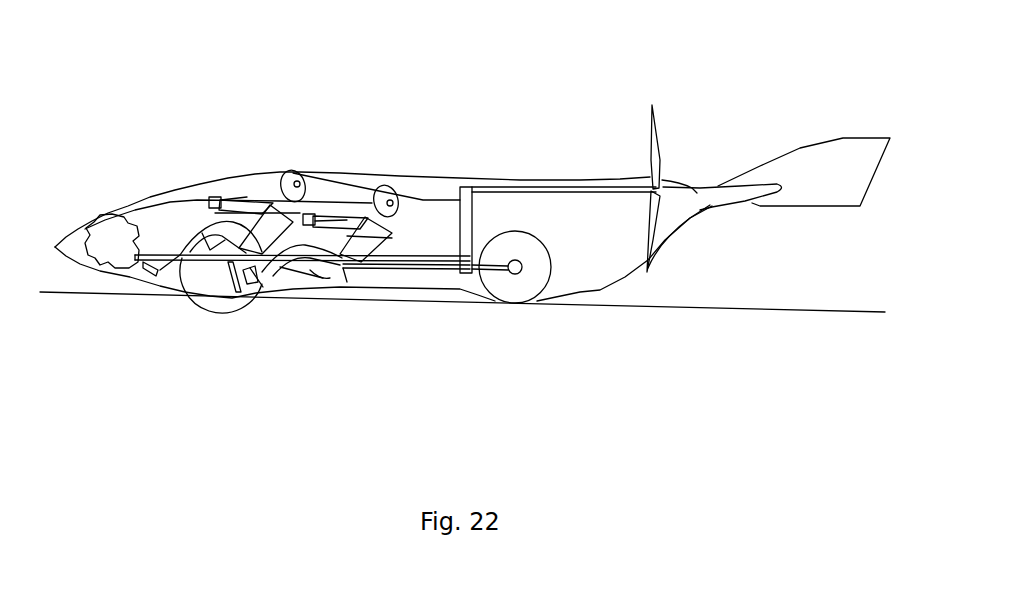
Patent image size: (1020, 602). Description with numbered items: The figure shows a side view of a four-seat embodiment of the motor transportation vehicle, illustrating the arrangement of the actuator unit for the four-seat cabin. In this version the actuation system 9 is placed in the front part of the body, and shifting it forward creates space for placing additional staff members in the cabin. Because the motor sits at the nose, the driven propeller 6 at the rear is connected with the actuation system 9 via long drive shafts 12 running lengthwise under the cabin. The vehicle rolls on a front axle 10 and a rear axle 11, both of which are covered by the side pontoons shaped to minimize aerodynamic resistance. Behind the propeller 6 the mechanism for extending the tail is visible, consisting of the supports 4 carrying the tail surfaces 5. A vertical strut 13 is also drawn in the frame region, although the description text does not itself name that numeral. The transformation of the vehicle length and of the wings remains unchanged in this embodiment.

The supports 4 is at (733, 197).
The tail surfaces 5 is at (804, 293).
The driven propeller 6 is at (689, 139).
The actuation system 9 is at (123, 323).
The front axle 10 is at (225, 347).
The rear axle 11 is at (522, 336).
The long drive shafts 12 is at (401, 315).
The vertical strut 13 is at (487, 315).